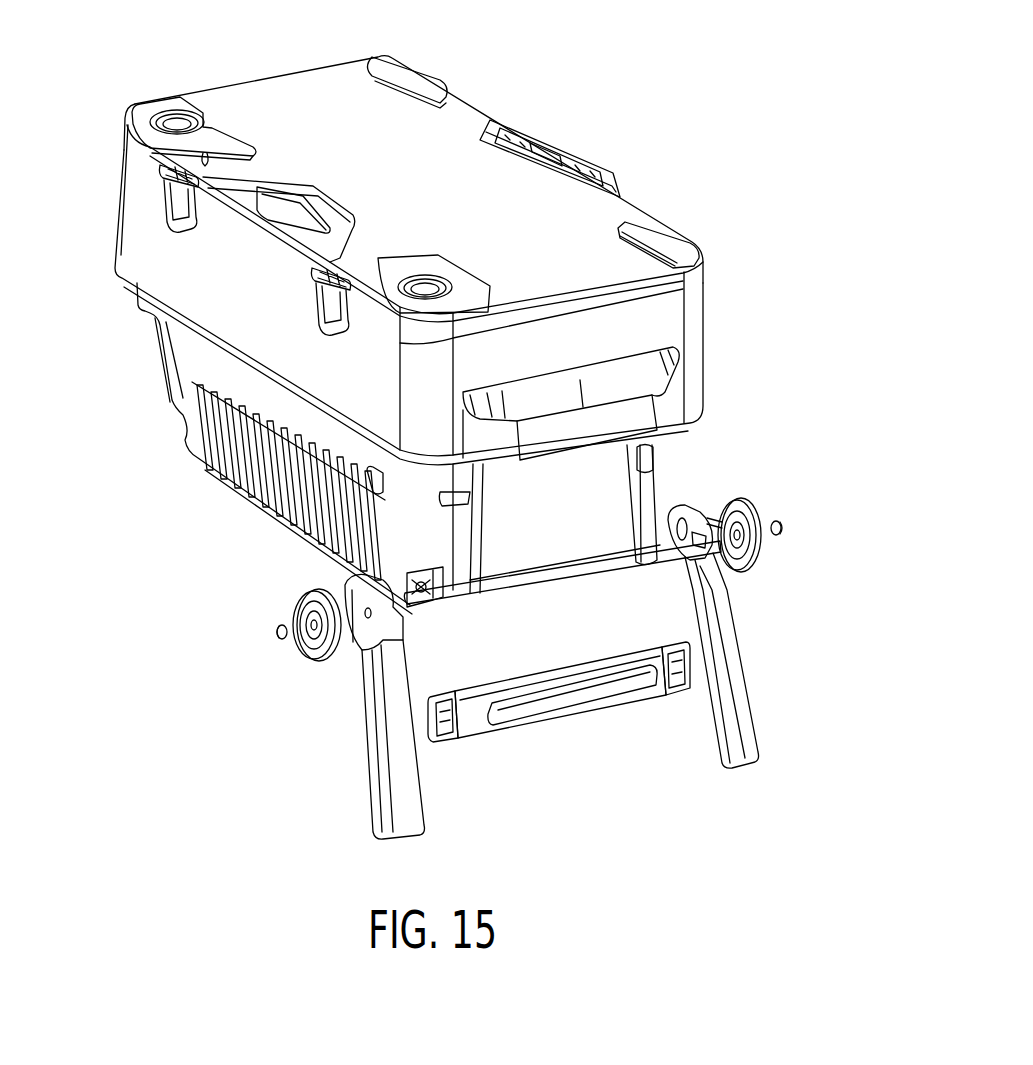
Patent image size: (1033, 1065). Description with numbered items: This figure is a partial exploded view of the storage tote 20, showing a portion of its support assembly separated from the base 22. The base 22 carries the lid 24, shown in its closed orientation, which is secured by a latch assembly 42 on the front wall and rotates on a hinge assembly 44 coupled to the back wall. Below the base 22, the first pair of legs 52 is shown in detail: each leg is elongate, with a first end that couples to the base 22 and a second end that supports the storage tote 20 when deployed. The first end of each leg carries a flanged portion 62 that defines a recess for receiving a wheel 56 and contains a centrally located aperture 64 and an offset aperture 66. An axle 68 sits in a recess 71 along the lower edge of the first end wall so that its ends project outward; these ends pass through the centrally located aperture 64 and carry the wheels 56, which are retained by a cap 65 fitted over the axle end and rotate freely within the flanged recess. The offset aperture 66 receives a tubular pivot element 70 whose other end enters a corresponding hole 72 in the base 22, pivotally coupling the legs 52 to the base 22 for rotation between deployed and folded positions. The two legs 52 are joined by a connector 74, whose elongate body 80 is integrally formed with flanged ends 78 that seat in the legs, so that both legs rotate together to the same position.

The storage tote 20 is at (680, 64).
The base 22 is at (112, 225).
The lid 24 is at (443, 130).
The latch assembly 42 is at (597, 153).
The hinge assembly 44 is at (182, 236).
The first pair of legs 52 is at (742, 758).
The wheels 56 is at (764, 562).
The flanged portion 62 is at (368, 665).
The centrally located aperture 64 is at (686, 522).
The cap 65 is at (784, 526).
The offset aperture 66 is at (718, 515).
The axle 68 is at (675, 432).
The tubular pivot element 70 is at (742, 556).
The recess 71 is at (650, 458).
The hole 72 is at (422, 604).
The connector 74 is at (592, 714).
The ends 78 is at (674, 693).
The body 80 is at (520, 678).